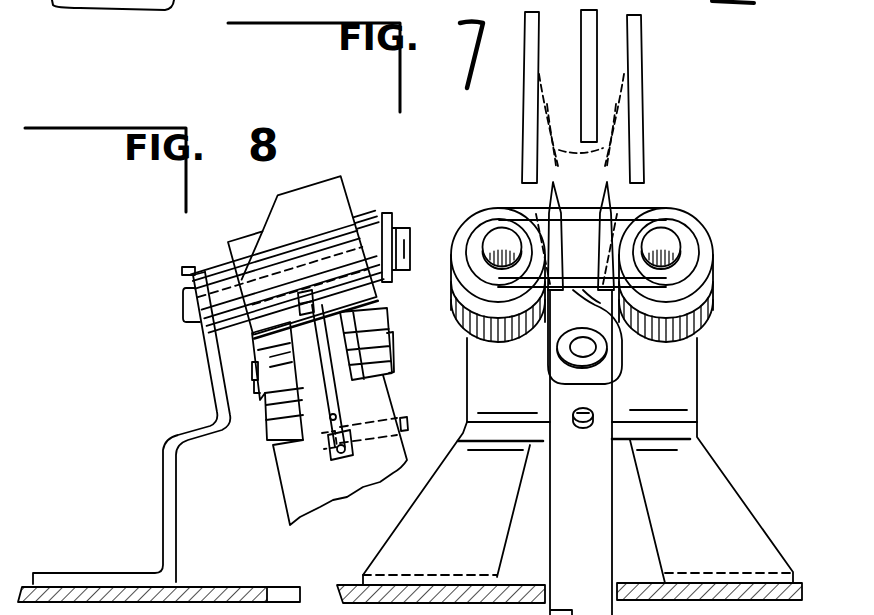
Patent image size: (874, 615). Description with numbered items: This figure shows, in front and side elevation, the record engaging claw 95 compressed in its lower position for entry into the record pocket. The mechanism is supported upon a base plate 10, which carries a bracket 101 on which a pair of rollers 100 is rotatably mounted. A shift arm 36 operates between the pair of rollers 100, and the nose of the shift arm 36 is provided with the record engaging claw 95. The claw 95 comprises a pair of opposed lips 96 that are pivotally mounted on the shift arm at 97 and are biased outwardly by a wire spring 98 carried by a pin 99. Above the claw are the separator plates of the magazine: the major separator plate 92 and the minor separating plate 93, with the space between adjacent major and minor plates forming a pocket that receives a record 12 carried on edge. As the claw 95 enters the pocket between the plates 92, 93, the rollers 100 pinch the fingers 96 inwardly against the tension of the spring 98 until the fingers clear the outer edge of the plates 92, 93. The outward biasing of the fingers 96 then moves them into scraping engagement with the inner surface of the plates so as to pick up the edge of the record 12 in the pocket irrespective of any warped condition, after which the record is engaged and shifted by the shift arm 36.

In FIG. 7, the base plate 10 is at (353, 585).
In FIG. 8, the base plate 10 is at (197, 589).
In FIG. 7, the record 12 is at (589, 55).
In FIG. 7, the shift arm 36 is at (600, 523).
In FIG. 8, the shift arm 36 is at (290, 487).
In FIG. 7, the major separator plate 92 is at (642, 153).
In FIG. 7, the minor separating plate 93 is at (525, 137).
In FIG. 7, the record engaging claw 95 is at (633, 208).
In FIG. 7, the lips 96 is at (601, 196).
In FIG. 8, the lips 96 is at (343, 197).
In FIG. 7, the pivot 97 is at (585, 349).
In FIG. 8, the pivot 97 is at (393, 347).
In FIG. 8, the wire spring 98 is at (340, 410).
In FIG. 7, the pin 99 is at (593, 416).
In FIG. 8, the pin 99 is at (408, 425).
In FIG. 7, the rollers 100 is at (713, 281).
In FIG. 8, the rollers 100 is at (243, 242).
In FIG. 7, the bracket 101 is at (685, 385).
In FIG. 8, the bracket 101 is at (163, 457).